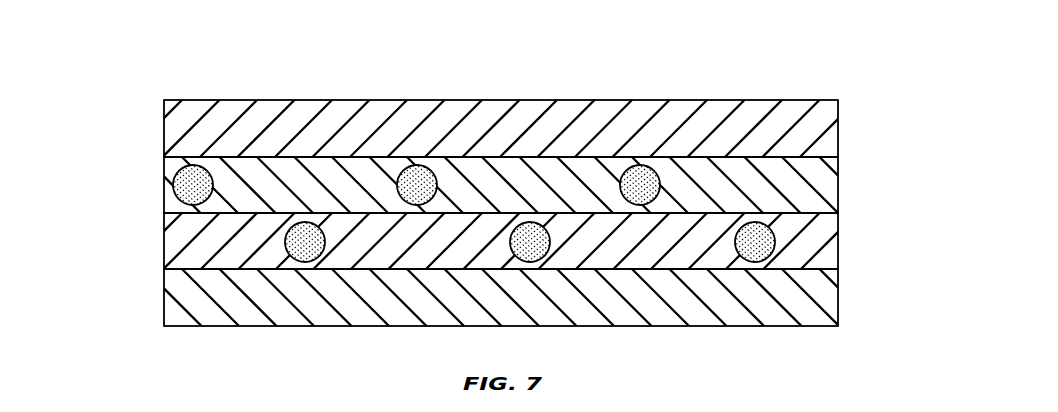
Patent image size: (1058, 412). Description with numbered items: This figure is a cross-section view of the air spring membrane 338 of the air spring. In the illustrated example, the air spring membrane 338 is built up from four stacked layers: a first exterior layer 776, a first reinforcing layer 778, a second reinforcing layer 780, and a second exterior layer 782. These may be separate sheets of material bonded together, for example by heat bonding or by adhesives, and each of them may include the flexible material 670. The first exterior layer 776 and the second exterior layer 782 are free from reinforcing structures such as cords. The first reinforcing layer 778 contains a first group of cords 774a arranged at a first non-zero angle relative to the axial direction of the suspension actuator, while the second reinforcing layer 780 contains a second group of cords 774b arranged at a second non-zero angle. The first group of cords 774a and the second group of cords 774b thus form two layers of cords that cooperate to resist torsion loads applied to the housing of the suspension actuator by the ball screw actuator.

The air spring membrane 338 is at (123, 98).
The flexible material 670 is at (181, 125).
The first group of cords 774a is at (200, 166).
The second group of cords 774b is at (306, 222).
The first exterior layer 776 is at (858, 134).
The first reinforcing layer 778 is at (858, 191).
The second reinforcing layer 780 is at (858, 246).
The second exterior layer 782 is at (858, 301).